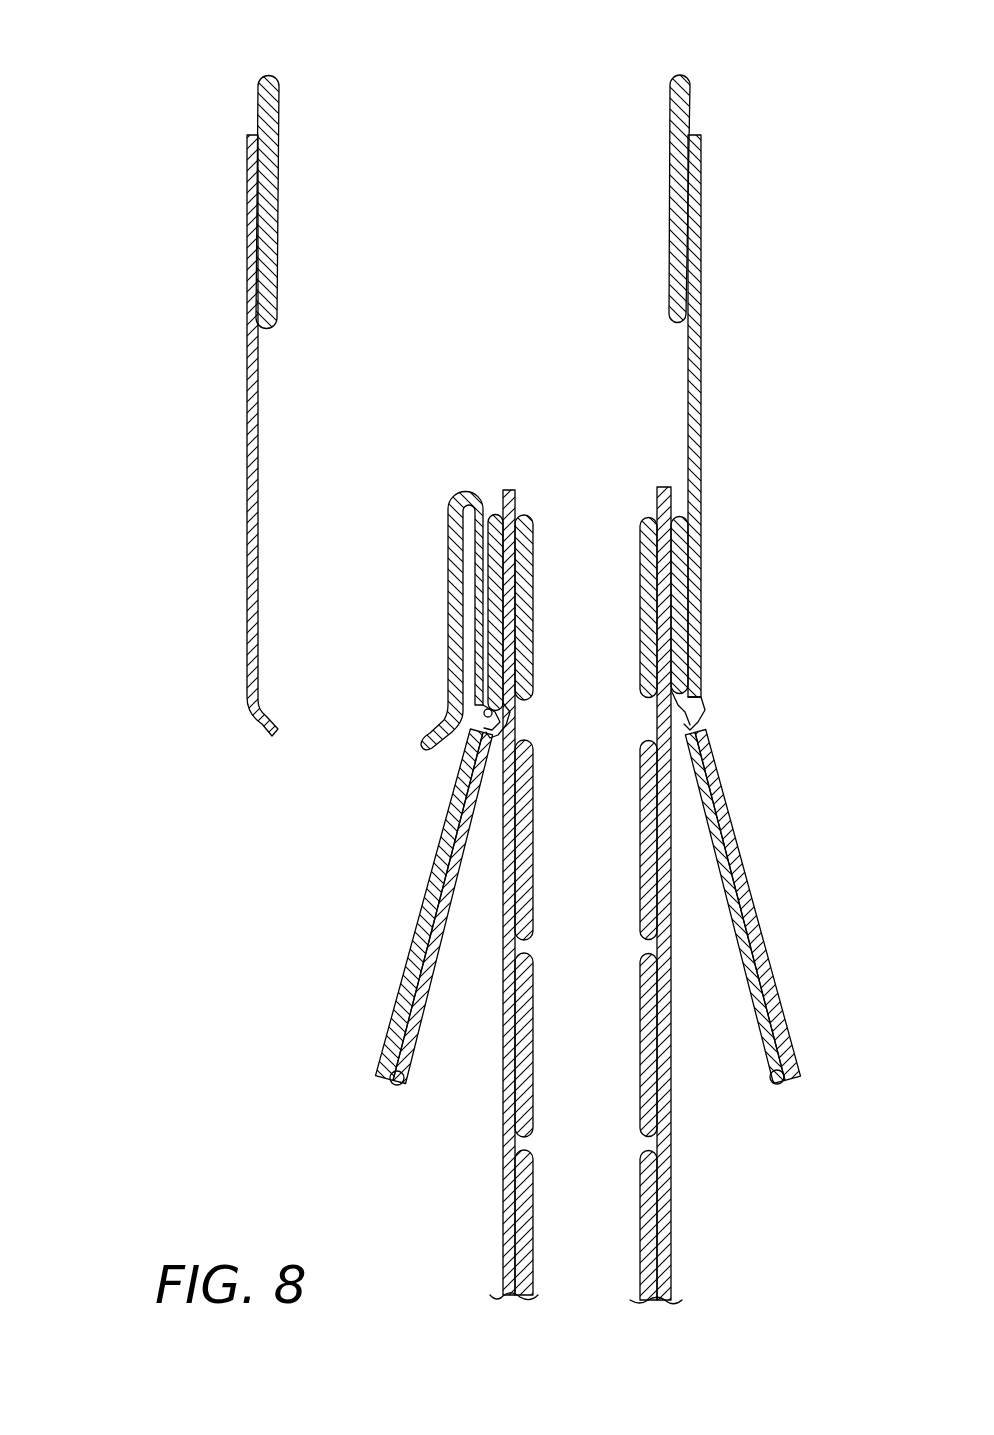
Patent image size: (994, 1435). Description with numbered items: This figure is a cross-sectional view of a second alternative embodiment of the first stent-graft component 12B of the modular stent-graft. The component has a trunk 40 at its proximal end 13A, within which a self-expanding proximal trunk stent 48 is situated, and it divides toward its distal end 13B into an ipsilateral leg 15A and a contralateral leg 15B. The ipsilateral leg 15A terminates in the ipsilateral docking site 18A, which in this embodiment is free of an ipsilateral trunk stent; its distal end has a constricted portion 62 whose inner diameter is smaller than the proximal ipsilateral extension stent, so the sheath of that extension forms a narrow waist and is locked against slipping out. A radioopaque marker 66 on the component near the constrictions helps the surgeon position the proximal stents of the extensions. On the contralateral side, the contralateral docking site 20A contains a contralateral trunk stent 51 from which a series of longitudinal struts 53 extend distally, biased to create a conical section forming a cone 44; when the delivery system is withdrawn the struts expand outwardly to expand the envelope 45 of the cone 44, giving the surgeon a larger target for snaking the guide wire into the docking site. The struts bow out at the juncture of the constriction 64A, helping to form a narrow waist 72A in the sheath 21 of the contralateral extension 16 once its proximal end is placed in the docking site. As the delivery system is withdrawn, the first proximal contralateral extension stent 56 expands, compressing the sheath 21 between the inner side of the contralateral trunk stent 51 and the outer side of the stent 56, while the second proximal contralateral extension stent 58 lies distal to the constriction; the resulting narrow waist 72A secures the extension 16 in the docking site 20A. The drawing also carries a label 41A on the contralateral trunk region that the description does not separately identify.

The first stent-graft component 12B is at (165, 140).
The proximal end 13A is at (427, 62).
The distal end 13B is at (593, 1310).
The trunk 40 is at (247, 343).
The constricted portion 62 is at (248, 713).
The ipsilateral leg 15A is at (323, 583).
The ipsilateral docking site 18A is at (287, 628).
The proximal trunk stent 48 is at (690, 98).
The blade contact 41A is at (702, 347).
The first proximal contralateral extension stent 56 is at (645, 522).
The contralateral docking site 20A is at (603, 585).
The contralateral trunk stent 51 is at (680, 620).
The contralateral leg 15B is at (608, 643).
The constriction 64A is at (693, 717).
The narrow waist 72A is at (518, 715).
The radioopaque marker 66 is at (455, 752).
The cone 44 is at (727, 807).
The envelope 45 is at (753, 900).
The longitudinal struts 53 is at (760, 993).
The second proximal contralateral extension stent 58 is at (523, 900).
The sheath 21 is at (502, 1203).
The contralateral extension 16 is at (668, 1128).